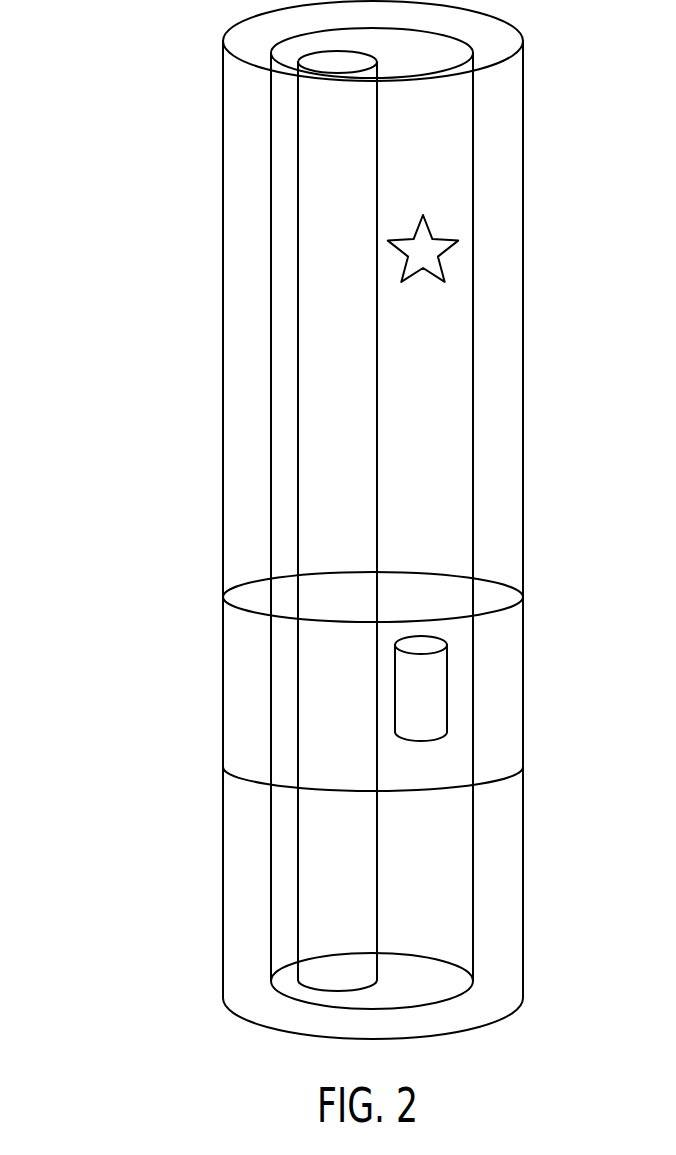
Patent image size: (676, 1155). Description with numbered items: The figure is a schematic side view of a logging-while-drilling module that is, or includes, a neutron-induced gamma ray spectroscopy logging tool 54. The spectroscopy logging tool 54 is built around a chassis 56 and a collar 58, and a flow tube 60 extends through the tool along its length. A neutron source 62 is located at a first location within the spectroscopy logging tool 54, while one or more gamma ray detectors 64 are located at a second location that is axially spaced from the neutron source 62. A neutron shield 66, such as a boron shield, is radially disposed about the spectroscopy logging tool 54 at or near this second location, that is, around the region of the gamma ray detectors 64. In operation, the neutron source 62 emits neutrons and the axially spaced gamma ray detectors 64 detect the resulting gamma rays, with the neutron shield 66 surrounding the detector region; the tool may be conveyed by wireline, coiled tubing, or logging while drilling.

The neutron-induced gamma ray spectroscopy logging tool 54 is at (119, 166).
The chassis 56 is at (462, 473).
The collar 58 is at (238, 363).
The flow tube 60 is at (337, 932).
The neutron source 62 is at (458, 241).
The gamma ray detector 64 is at (430, 702).
The neutron shield 66 is at (238, 695).